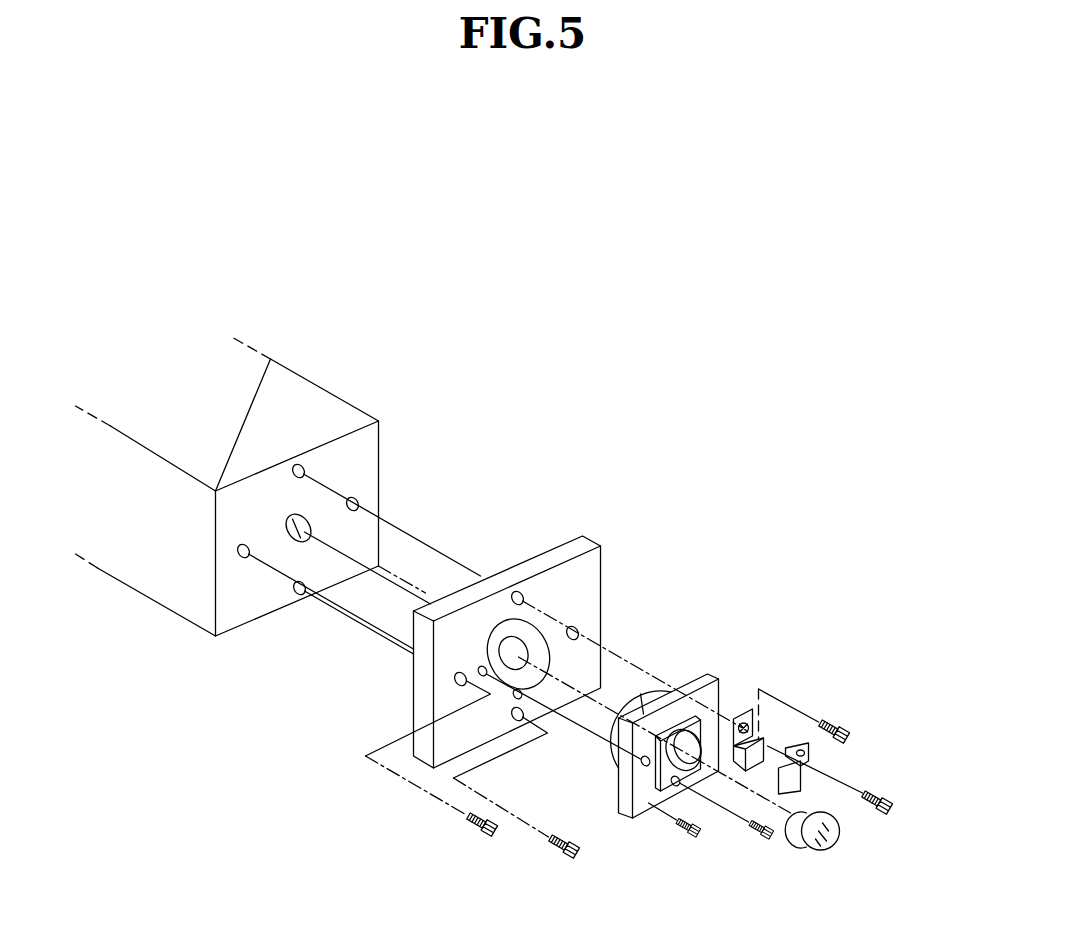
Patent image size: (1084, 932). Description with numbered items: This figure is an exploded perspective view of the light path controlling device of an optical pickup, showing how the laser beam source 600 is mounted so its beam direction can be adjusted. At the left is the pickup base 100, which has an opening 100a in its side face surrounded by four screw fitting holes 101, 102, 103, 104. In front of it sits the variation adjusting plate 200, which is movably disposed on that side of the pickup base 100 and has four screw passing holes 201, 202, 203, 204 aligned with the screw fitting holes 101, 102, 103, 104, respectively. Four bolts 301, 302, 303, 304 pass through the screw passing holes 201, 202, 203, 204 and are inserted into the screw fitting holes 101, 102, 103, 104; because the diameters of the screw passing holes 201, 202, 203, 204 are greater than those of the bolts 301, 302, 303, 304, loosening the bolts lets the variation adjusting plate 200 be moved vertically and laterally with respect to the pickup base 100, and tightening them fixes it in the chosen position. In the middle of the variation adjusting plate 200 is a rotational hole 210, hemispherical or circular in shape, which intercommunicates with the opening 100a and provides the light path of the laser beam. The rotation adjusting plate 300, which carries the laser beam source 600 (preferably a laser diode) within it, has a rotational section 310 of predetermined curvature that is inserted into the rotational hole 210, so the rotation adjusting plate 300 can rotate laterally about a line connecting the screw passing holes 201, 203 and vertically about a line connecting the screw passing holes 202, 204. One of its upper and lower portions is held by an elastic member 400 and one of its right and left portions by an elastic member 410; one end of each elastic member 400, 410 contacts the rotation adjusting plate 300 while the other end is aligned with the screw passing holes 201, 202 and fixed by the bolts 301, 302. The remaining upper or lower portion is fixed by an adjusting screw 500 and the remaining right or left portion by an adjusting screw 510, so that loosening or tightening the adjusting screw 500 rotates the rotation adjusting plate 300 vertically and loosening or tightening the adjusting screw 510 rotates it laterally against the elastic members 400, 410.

The pickup base 100 is at (317, 378).
The opening 100a is at (305, 520).
The screw fitting hole 101 is at (300, 466).
The screw fitting hole 102 is at (357, 503).
The screw fitting hole 103 is at (299, 592).
The screw fitting hole 104 is at (243, 556).
The variation adjusting plate 200 is at (555, 550).
The screw passing hole 201 is at (518, 594).
The screw passing hole 202 is at (576, 630).
The screw passing hole 203 is at (519, 718).
The screw passing hole 204 is at (458, 682).
The rotational hole 210 is at (540, 640).
The rotation adjusting plate 300 is at (622, 820).
The bolt 301 is at (822, 722).
The bolt 302 is at (888, 796).
The bolt 303 is at (556, 842).
The bolt 304 is at (470, 827).
The rotational section 310 is at (640, 697).
The elastic member 400 is at (758, 738).
The elastic member 410 is at (810, 760).
The adjusting screw 500 is at (753, 834).
The adjusting screw 510 is at (683, 833).
The laser beam source 600 is at (838, 827).